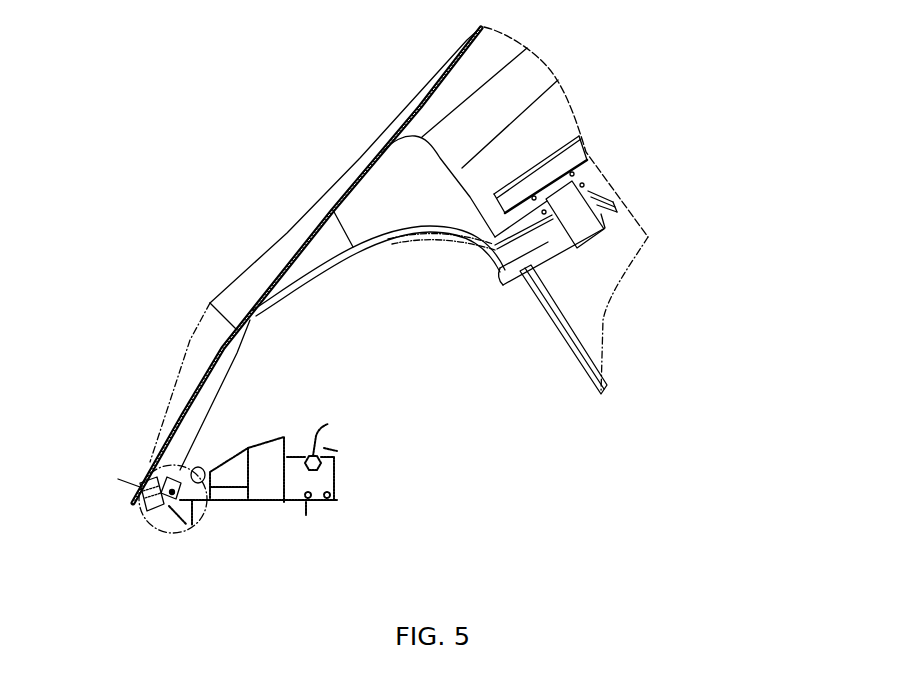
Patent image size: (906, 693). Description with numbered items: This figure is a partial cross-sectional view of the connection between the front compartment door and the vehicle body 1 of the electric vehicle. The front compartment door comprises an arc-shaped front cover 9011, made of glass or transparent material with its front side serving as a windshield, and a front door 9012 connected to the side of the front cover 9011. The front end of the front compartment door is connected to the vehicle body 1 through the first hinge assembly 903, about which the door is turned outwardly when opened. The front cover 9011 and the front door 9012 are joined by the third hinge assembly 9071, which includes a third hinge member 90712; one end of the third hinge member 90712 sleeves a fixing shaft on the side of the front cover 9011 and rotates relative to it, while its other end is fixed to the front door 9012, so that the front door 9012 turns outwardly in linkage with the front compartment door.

The front cover 9011 is at (285, 250).
The front door 9012 is at (590, 322).
The third hinge member 90712 is at (578, 212).
The third hinge assembly 9071 is at (612, 212).
The first hinge assembly 903 is at (155, 478).
The vehicle body 1 is at (183, 532).